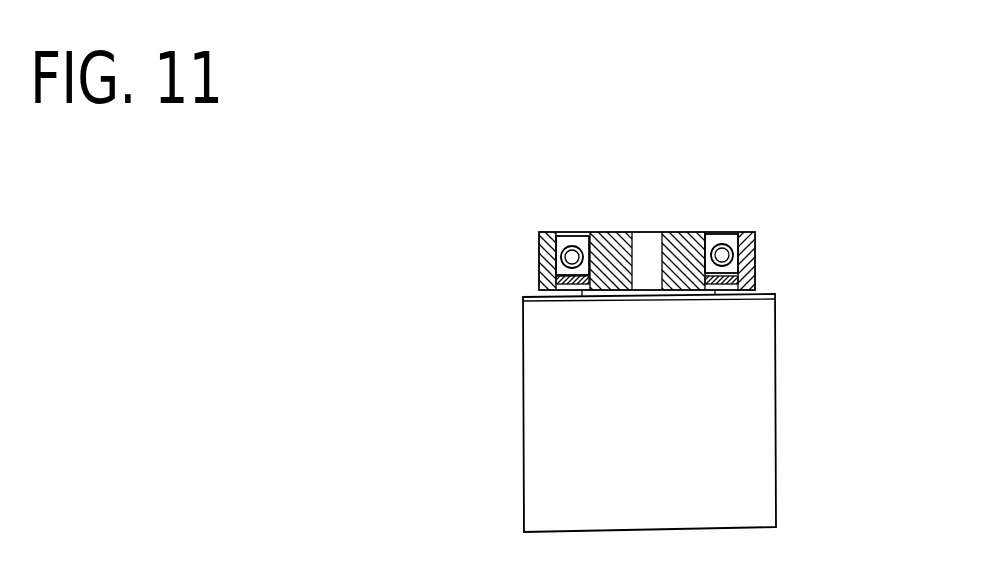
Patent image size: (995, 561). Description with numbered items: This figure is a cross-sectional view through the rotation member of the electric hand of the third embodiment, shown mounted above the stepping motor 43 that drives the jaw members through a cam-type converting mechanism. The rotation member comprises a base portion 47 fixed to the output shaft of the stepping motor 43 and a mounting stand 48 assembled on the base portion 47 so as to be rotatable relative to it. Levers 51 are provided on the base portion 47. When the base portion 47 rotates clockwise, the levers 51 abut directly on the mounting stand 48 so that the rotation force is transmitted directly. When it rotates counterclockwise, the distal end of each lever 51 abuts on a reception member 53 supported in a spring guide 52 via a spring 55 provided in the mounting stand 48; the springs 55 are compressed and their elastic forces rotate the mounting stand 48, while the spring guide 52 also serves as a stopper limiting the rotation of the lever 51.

The stepping motor 43 is at (758, 402).
The base portion 47 is at (681, 242).
The mounting stand 48 is at (757, 255).
The lever 51 is at (604, 255).
The spring guide 52 is at (740, 231).
The reception member 53 is at (563, 233).
The spring 55 is at (577, 235).